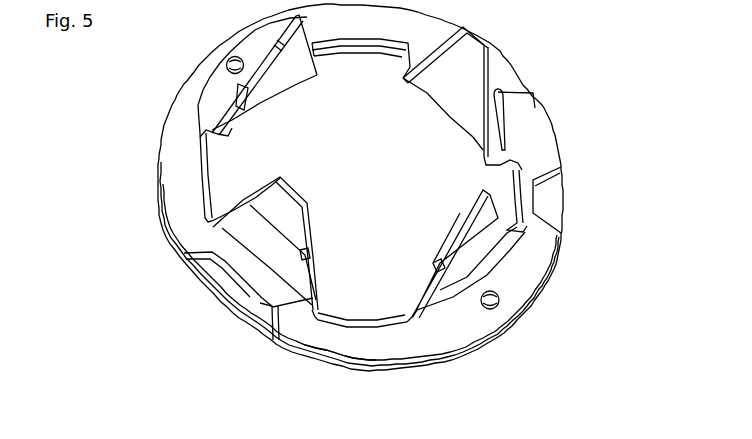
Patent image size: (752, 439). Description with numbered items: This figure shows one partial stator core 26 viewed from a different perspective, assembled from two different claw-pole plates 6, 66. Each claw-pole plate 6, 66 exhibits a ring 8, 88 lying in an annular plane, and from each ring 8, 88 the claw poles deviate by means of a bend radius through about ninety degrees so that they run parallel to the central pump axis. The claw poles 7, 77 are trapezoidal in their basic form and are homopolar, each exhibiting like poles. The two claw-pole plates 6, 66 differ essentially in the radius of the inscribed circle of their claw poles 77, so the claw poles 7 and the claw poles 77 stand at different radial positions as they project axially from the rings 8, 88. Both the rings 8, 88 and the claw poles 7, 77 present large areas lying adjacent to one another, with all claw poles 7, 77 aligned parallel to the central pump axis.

The partial stator core 26 is at (140, 234).
The claw pole 7 is at (290, 50).
The claw pole 77 is at (237, 108).
The claw-pole plate 6 is at (270, 357).
The claw-pole plate 66 is at (295, 358).
The ring 8 is at (558, 195).
The ring 88 is at (540, 142).